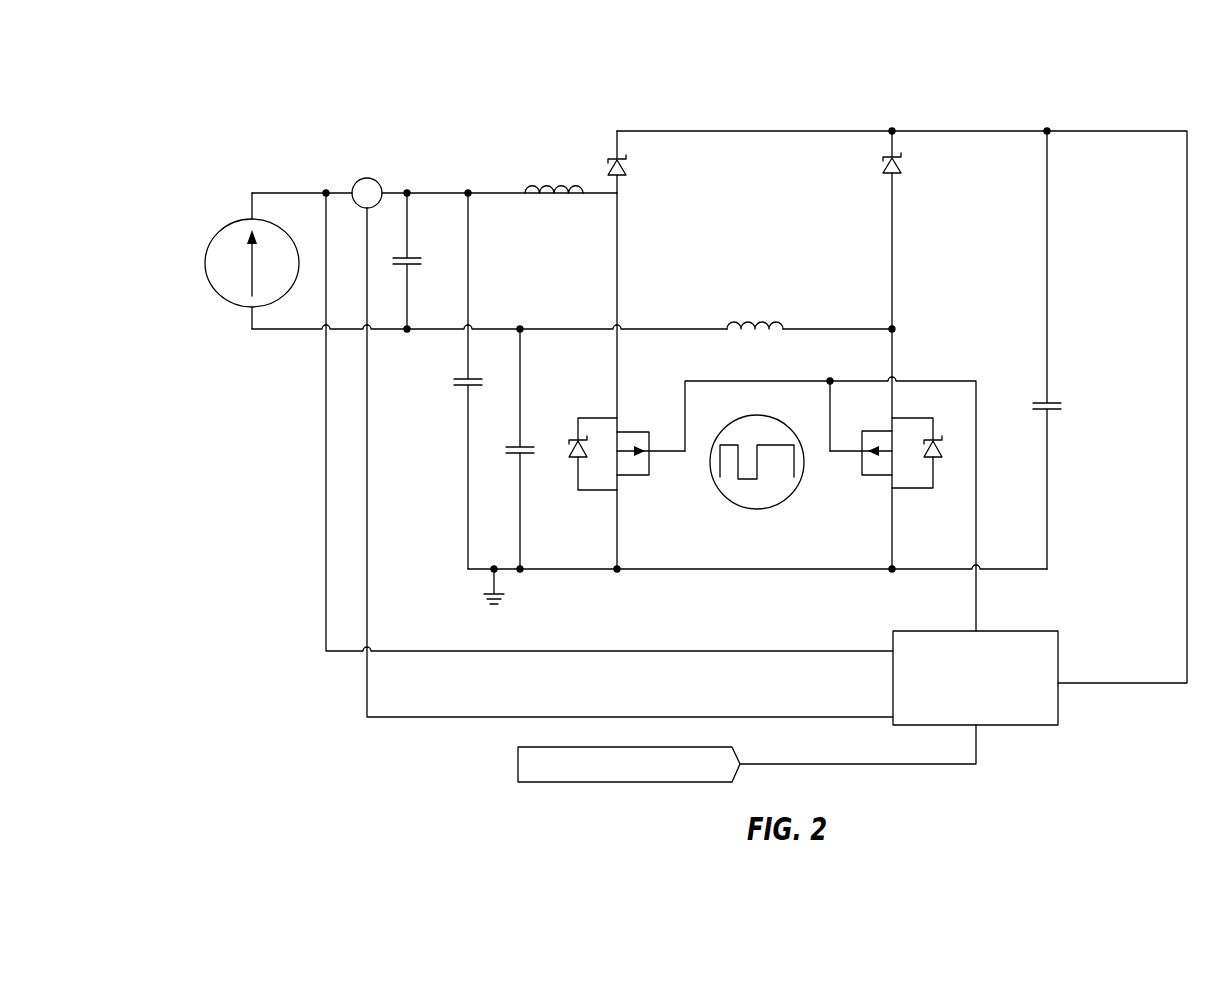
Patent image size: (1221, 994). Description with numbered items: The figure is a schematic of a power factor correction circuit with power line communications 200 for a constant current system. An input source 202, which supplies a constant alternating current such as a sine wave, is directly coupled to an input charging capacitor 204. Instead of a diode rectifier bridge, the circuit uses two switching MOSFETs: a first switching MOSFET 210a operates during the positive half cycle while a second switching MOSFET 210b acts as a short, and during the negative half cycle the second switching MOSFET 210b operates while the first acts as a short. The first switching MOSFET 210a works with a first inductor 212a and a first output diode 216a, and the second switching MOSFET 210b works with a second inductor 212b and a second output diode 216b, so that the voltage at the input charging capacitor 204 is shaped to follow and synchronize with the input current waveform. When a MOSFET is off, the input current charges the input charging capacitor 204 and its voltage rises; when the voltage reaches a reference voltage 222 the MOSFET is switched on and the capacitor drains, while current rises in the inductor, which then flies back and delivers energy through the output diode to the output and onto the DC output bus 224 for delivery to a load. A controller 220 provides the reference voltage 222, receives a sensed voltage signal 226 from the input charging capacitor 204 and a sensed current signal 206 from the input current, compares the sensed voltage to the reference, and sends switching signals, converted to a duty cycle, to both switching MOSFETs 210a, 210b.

The power factor correction circuit with power line communications 200 is at (918, 84).
The input source 202 is at (206, 262).
The input charging capacitor 204 is at (414, 266).
The sensed current signal 206 is at (368, 453).
The first switching MOSFET 210a is at (593, 491).
The second switching MOSFET 210b is at (913, 491).
The first inductor 212a is at (548, 189).
The second inductor 212b is at (748, 325).
The first output diode 216a is at (620, 177).
The second output diode 216b is at (897, 174).
The controller 220 is at (1018, 727).
The reference voltage 222 is at (518, 764).
The DC output bus 224 is at (1047, 129).
The sensed voltage signal 226 is at (326, 545).